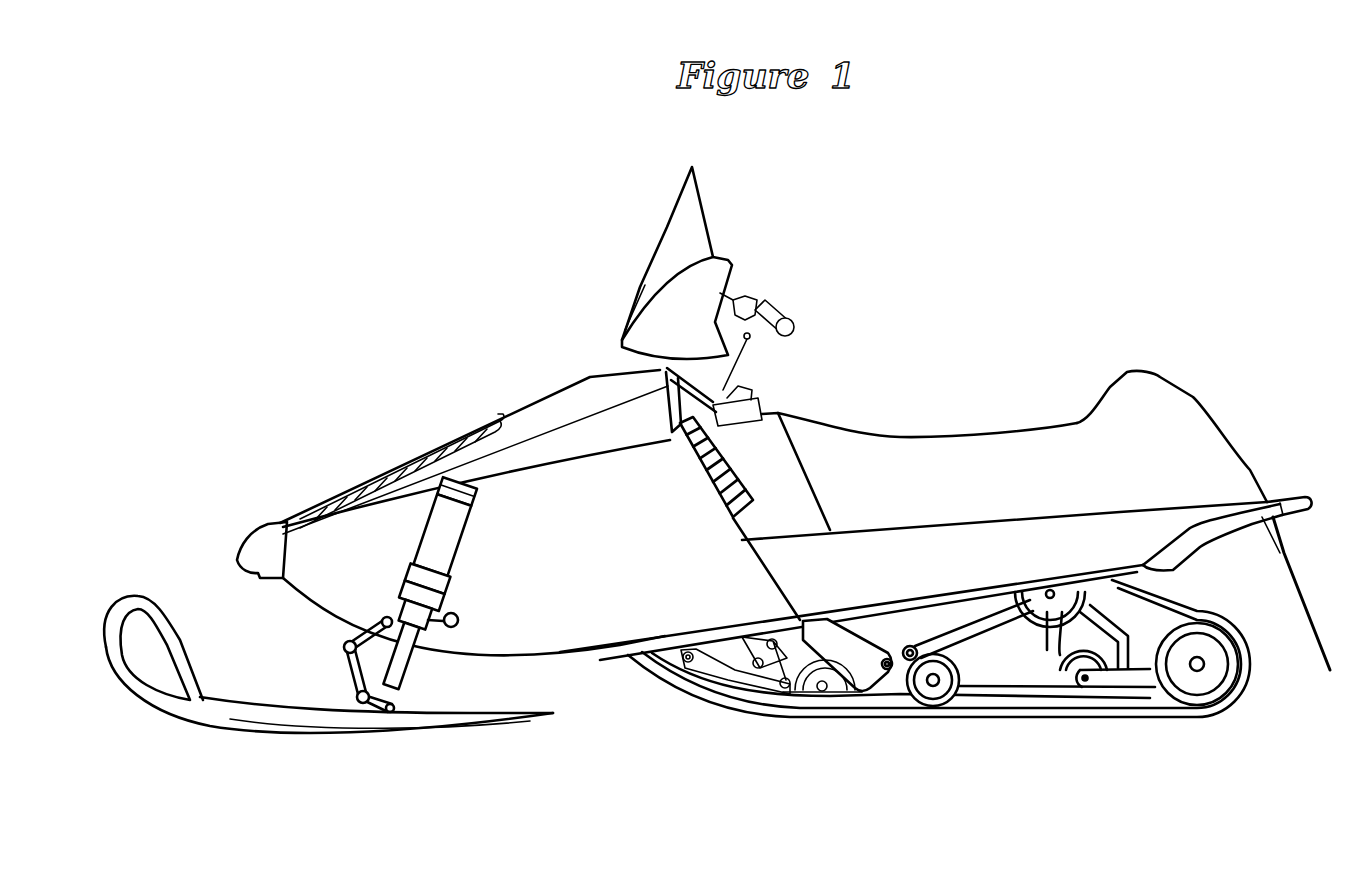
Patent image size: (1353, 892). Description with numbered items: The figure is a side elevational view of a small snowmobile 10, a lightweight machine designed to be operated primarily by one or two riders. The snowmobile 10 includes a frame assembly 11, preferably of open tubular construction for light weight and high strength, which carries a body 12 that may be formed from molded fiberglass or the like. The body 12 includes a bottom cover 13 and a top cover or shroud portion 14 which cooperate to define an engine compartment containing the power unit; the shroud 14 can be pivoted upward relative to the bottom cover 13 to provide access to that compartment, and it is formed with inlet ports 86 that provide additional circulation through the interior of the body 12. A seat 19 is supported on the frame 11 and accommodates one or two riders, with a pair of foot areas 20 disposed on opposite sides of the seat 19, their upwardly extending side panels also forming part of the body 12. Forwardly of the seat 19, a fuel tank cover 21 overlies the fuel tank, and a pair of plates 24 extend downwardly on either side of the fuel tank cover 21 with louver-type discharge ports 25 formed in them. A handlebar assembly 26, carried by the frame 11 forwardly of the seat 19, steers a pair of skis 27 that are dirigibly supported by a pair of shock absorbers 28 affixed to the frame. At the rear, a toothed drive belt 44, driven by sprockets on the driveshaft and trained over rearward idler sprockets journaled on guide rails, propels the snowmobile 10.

The small snowmobile 10 is at (1108, 295).
The frame assembly 11 is at (856, 616).
The body 12 is at (1080, 563).
The bottom cover 13 is at (573, 637).
The top cover or shroud portion 14 is at (598, 383).
The seat 19 is at (970, 447).
The foot areas 20 is at (873, 550).
The fuel tank cover 21 is at (773, 449).
The plates 24 is at (715, 512).
The louver-type discharge ports 25 is at (668, 428).
The handlebar assembly 26 is at (765, 270).
The skis 27 is at (270, 727).
The shock absorbers 28 is at (453, 533).
The toothed drive belt 44 is at (767, 705).
The inlet ports 86 is at (480, 441).